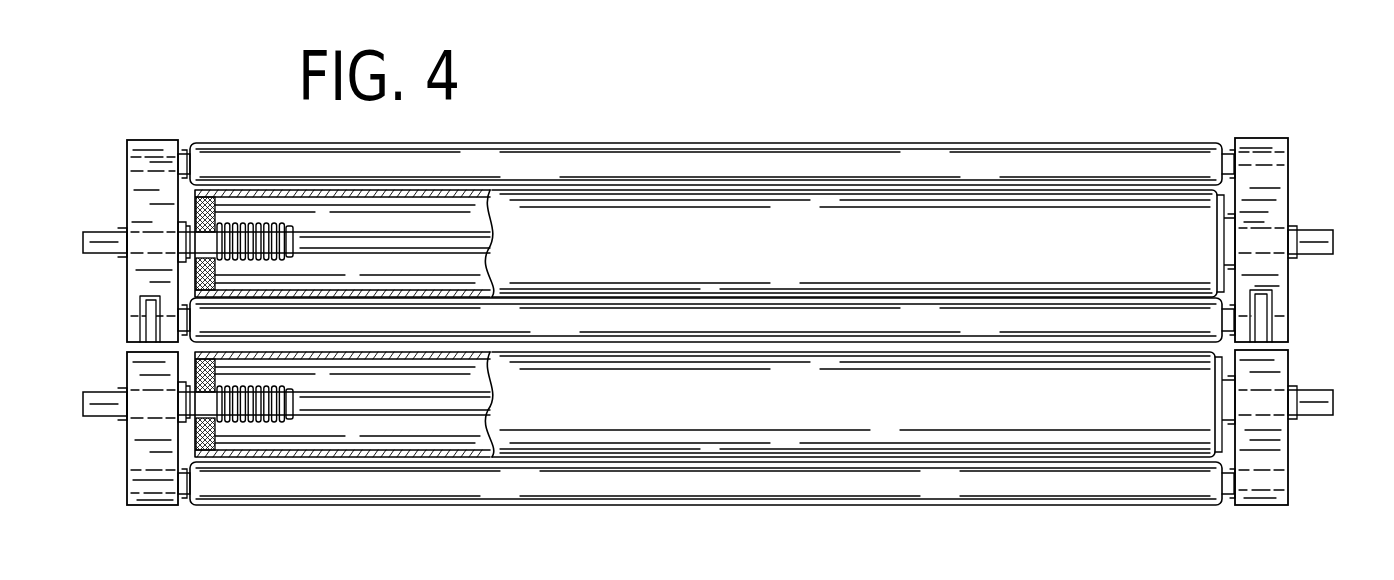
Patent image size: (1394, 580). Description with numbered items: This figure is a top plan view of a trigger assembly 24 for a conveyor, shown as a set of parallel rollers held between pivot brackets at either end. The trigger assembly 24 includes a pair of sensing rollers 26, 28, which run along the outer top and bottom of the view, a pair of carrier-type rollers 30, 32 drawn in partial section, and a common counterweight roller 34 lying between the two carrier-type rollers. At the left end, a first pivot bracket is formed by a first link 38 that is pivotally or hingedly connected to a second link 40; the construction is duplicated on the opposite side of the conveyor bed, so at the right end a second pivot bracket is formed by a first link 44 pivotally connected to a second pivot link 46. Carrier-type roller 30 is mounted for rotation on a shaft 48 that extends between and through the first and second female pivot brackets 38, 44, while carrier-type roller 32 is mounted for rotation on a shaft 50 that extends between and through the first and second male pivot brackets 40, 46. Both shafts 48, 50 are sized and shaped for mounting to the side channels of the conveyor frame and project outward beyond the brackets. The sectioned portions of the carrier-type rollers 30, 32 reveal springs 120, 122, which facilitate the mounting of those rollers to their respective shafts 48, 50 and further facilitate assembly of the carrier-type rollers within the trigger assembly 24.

The trigger assembly 24 is at (884, 121).
The sensing roller 26 is at (995, 141).
The sensing roller 28 is at (1124, 500).
The carrier-type roller 30 is at (626, 212).
The carrier-type roller 32 is at (700, 420).
The common counterweight roller 34 is at (966, 320).
The first link 38 is at (146, 213).
The second link 40 is at (148, 456).
The first link 44 is at (1278, 180).
The second pivot link 46 is at (1278, 452).
The shaft 48 is at (83, 241).
The shaft 50 is at (83, 402).
The spring 120 is at (240, 225).
The spring 122 is at (260, 420).